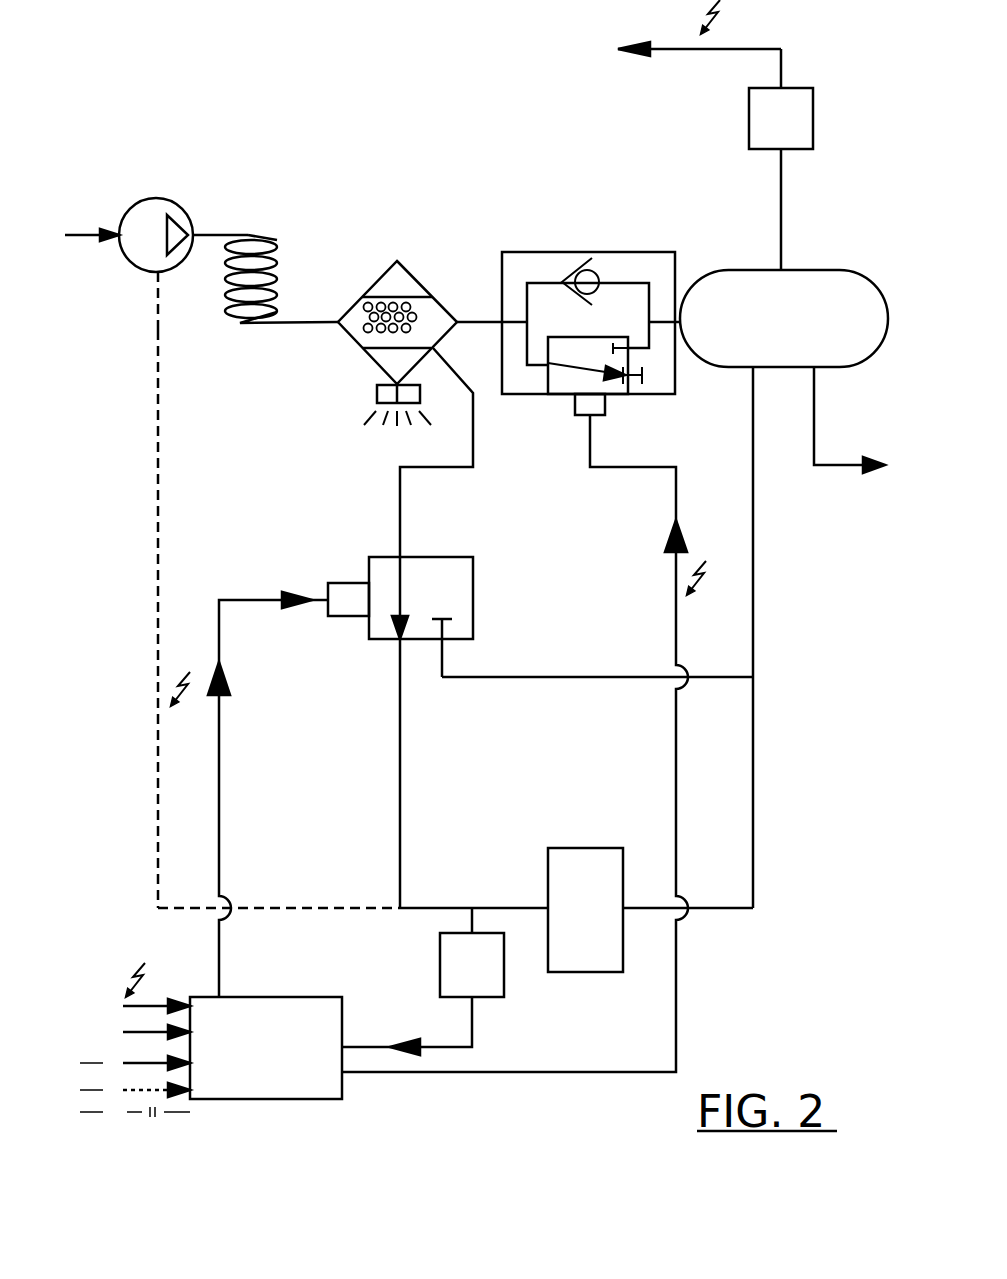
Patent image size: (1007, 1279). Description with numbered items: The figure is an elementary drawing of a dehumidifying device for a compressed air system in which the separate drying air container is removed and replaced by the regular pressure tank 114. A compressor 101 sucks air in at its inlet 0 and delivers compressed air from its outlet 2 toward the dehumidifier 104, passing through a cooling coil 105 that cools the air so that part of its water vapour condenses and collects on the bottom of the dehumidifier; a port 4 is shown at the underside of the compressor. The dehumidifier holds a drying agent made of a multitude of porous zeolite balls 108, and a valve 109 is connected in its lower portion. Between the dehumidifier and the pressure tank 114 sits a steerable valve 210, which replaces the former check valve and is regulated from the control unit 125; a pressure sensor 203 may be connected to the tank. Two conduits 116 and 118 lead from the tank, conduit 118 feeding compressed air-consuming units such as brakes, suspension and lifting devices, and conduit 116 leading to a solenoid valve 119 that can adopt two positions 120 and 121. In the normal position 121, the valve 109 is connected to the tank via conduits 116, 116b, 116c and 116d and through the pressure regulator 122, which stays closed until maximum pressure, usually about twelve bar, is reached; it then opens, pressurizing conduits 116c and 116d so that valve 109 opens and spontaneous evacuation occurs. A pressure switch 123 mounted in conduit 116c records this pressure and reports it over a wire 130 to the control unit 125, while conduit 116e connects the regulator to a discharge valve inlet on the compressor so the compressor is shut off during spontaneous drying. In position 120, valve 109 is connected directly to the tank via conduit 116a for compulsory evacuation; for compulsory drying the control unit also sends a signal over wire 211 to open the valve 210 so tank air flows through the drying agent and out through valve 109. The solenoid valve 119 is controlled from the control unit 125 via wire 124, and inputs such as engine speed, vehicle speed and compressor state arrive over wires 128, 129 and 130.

The inlet 0 is at (90, 223).
The outlet 2 is at (220, 220).
The compressor control port 4 is at (169, 301).
The compressor 101 is at (148, 205).
The cooling coil 105 is at (249, 235).
The dehumidifier 104 is at (433, 297).
The porous zeolite balls 108 is at (374, 318).
The valve 109 is at (380, 392).
The steerable valve 210 is at (540, 265).
The pressure tank 114 is at (805, 285).
The pressure sensor 203 is at (800, 131).
The conduit 118 is at (838, 478).
The conduit 116 is at (757, 563).
The conduit 116a is at (497, 680).
The conduit 116b is at (760, 760).
The conduit 116c is at (440, 905).
The conduit 116d is at (400, 522).
The conduit 116e is at (157, 582).
The solenoid valve 119 is at (460, 580).
The position 120 is at (445, 635).
The position 121 is at (383, 628).
The wire 211 is at (672, 628).
The pressure regulator 122 is at (585, 943).
The pressure switch 123 is at (445, 953).
The wire 124 is at (220, 758).
The control unit 125 is at (325, 1097).
The wire 128 is at (127, 1006).
The wire 129 is at (127, 1032).
The wire 130 is at (438, 1038).